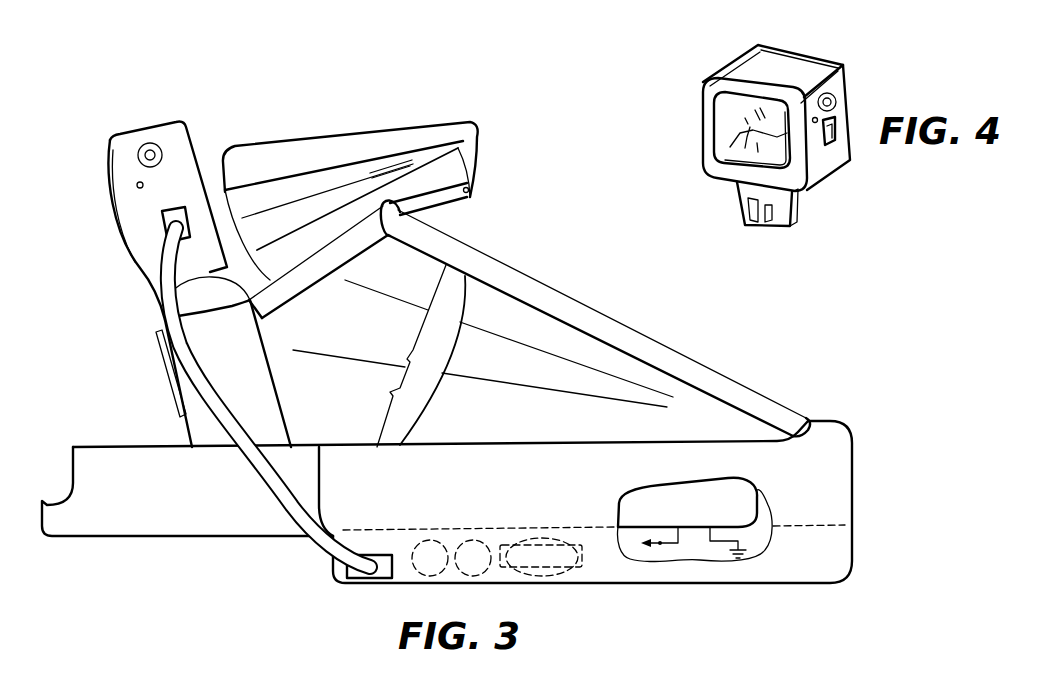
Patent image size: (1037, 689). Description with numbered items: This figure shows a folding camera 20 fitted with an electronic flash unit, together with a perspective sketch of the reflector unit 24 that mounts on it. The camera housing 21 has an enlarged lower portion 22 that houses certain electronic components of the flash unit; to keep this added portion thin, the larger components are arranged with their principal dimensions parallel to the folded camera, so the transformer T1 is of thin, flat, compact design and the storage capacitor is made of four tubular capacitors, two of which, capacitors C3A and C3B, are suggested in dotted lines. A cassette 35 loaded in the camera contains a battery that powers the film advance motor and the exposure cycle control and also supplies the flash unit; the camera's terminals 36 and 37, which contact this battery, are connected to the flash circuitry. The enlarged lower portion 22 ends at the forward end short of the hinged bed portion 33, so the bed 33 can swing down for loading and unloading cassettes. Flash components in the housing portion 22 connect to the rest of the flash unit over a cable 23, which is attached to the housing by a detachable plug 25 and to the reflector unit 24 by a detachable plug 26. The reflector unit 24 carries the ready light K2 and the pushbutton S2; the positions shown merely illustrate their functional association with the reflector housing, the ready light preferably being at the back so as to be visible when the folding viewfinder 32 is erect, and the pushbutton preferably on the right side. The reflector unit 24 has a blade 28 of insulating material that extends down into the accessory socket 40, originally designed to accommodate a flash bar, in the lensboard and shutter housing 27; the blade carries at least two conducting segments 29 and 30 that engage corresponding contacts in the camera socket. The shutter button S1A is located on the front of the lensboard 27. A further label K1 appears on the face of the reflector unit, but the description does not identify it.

In FIG. 3, the camera 20 is at (790, 399).
In FIG. 3, the housing 21 is at (836, 489).
In FIG. 3, the enlarged lower portion 22 is at (822, 563).
In FIG. 3, the cable 23 is at (268, 517).
In FIG. 3, the reflector unit 24 is at (157, 269).
In FIG. 4, the reflector unit 24 is at (700, 81).
In FIG. 3, the detachable plug 25 is at (384, 554).
In FIG. 3, the detachable plug 26 is at (184, 213).
In FIG. 3, the lensboard and shutter housing 27 is at (161, 323).
In FIG. 4, the blade 28 is at (798, 209).
In FIG. 4, the conducting segment 29 is at (748, 208).
In FIG. 4, the conducting segment 30 is at (766, 224).
In FIG. 3, the folding viewfinder 32 is at (356, 133).
In FIG. 3, the hinged bed portion 33 is at (163, 516).
In FIG. 3, the cassette 35 is at (733, 503).
In FIG. 3, the terminal 36 is at (688, 563).
In FIG. 3, the terminal 37 is at (707, 565).
In FIG. 3, the accessory socket 40 is at (194, 274).
In FIG. 3, the pushbutton S2 is at (167, 146).
In FIG. 4, the pushbutton S2 is at (837, 100).
In FIG. 3, the ready light K2 is at (136, 186).
In FIG. 4, the ready light K2 is at (819, 119).
In FIG. 4, the display K1 is at (733, 137).
In FIG. 3, the shutter button S1A is at (152, 352).
In FIG. 3, the tubular capacitor C3A is at (418, 569).
In FIG. 3, the tubular capacitor C3B is at (473, 577).
In FIG. 3, the transformer T1 is at (551, 575).